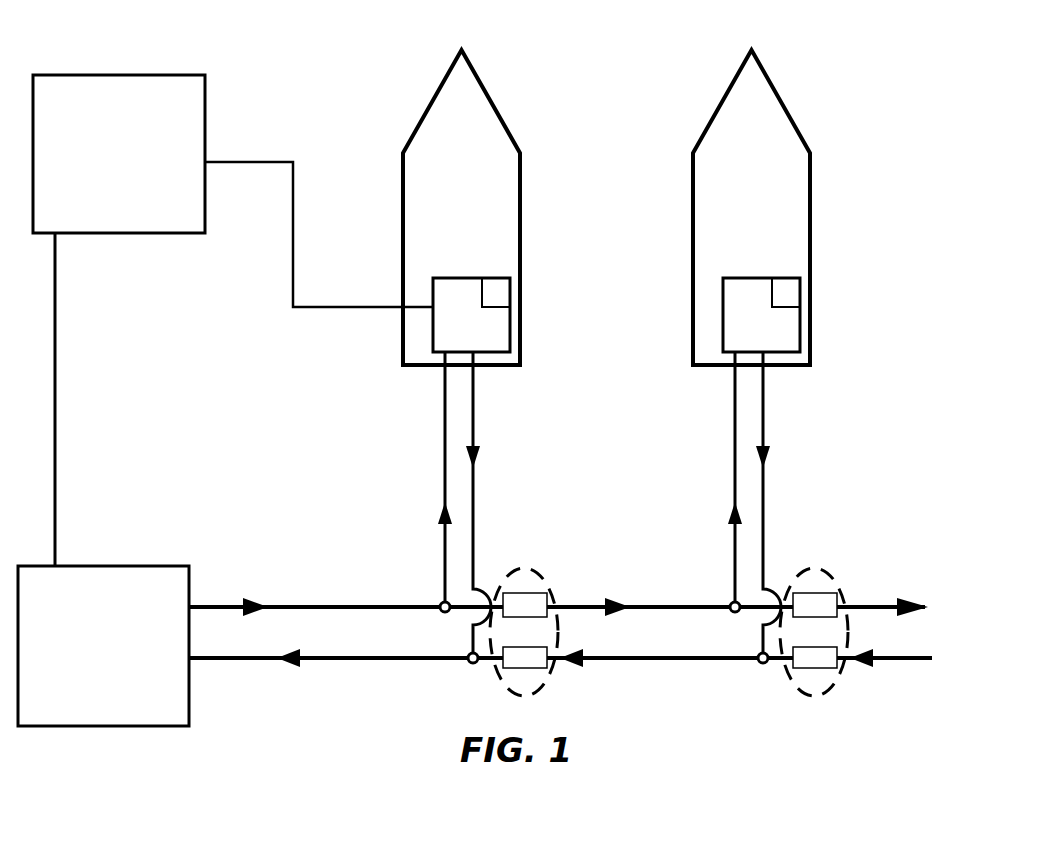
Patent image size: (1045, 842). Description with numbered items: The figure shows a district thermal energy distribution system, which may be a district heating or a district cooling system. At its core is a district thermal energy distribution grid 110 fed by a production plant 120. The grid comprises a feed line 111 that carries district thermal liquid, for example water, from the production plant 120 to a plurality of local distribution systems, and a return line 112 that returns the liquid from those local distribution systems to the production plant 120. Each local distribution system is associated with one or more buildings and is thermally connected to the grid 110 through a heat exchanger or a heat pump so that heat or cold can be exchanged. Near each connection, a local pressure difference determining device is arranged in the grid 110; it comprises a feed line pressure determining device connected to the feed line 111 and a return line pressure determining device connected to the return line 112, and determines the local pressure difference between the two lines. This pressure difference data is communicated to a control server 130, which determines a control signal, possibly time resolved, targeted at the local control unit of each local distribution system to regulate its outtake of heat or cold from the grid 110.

The district thermal energy distribution grid 110 is at (539, 599).
The feed line 111 is at (218, 605).
The return line 112 is at (337, 663).
The production plant 120 is at (87, 580).
The control server 130 is at (188, 90).